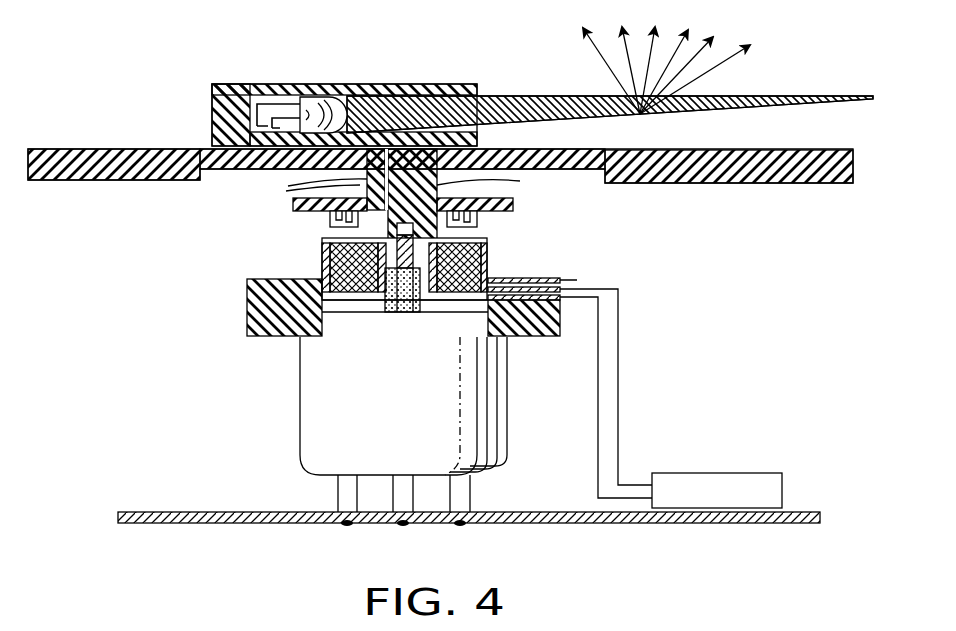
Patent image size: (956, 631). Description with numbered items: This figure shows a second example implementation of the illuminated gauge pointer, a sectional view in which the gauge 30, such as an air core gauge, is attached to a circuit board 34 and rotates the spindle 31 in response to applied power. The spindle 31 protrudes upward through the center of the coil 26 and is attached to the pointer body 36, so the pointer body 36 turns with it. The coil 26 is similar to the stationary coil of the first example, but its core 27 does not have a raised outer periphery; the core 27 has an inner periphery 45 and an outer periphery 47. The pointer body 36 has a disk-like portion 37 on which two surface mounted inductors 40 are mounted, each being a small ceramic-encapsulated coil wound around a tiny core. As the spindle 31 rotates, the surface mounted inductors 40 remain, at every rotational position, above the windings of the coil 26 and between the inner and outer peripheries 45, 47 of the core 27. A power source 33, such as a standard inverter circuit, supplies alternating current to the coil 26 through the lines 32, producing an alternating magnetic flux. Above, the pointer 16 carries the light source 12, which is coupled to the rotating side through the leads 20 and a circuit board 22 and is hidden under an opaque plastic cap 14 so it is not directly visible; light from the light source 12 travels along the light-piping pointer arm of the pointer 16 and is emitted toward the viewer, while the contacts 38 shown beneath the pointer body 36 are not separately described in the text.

The light source 12 is at (325, 98).
The opaque plastic cap 14 is at (428, 84).
The pointer 16 is at (770, 96).
The leads 20 is at (285, 118).
The circuit board 22 is at (245, 153).
The coil 26 is at (487, 250).
The core 27 is at (322, 253).
The gauge 30 is at (325, 416).
The spindle 31 is at (413, 305).
The lines 32 is at (618, 418).
The power source 33 is at (758, 473).
The circuit board 34 is at (167, 512).
The pointer body 36 is at (440, 183).
The disk-like portion 37 is at (513, 205).
The contacts 38 is at (286, 191).
The surface mounted inductors 40 is at (330, 222).
The inner periphery 45 is at (388, 300).
The outer periphery 47 is at (488, 272).